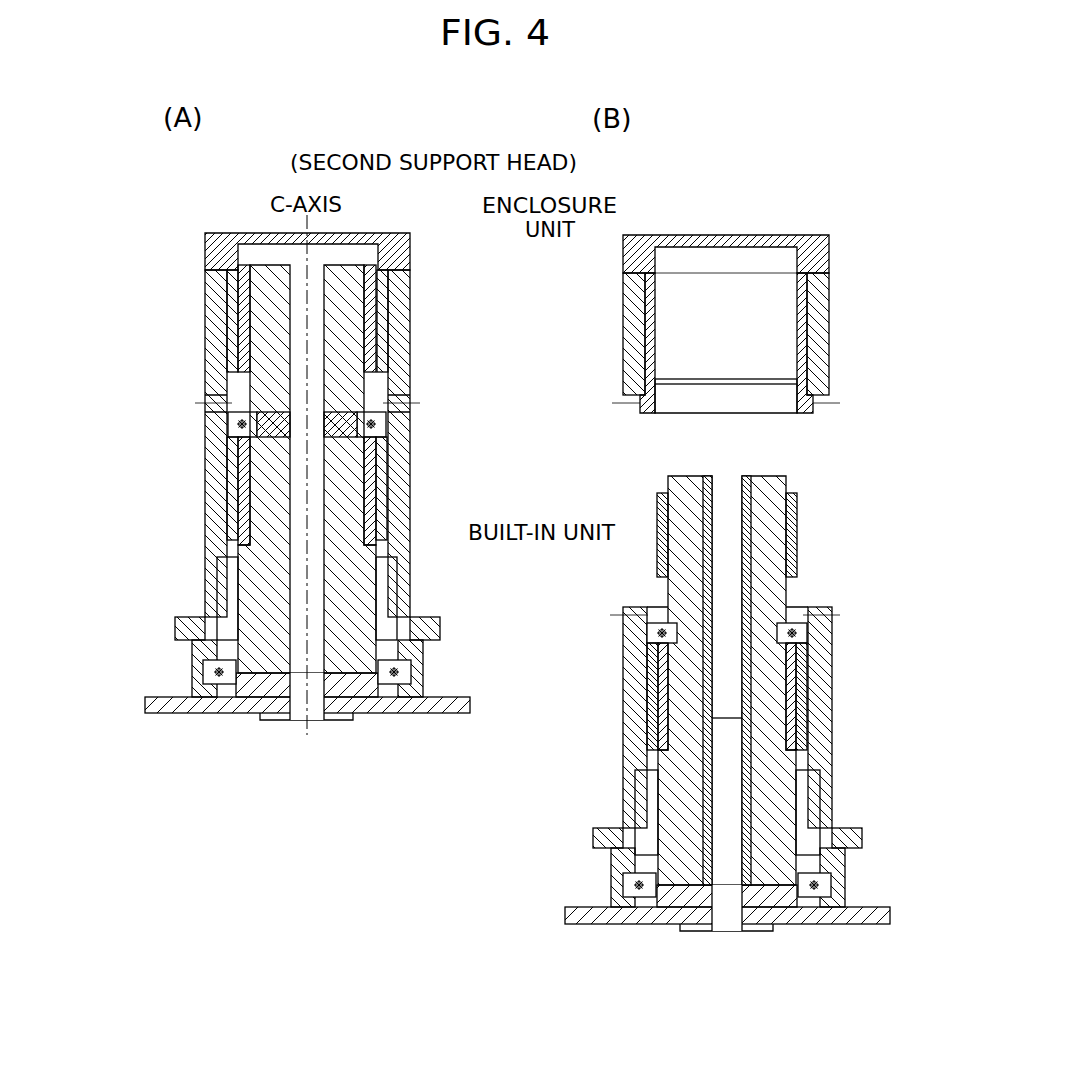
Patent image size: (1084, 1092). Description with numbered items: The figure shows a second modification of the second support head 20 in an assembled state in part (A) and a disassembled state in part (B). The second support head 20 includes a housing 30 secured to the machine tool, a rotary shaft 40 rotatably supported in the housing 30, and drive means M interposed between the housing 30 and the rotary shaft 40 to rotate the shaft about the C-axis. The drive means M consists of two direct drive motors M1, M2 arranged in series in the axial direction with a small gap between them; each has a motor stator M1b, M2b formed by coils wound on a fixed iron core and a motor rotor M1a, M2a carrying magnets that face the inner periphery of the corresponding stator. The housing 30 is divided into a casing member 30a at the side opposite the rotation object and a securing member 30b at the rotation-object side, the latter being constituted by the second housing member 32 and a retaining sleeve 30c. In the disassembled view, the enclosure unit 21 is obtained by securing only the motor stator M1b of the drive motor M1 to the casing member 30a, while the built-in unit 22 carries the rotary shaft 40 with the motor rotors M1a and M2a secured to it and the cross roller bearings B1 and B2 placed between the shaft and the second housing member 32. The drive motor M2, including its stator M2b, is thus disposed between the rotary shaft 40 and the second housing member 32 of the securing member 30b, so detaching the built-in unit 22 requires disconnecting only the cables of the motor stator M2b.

The second support head 20 is at (365, 228).
The housing 30 is at (214, 300).
The drive motor M1 is at (388, 317).
The drive means M is at (215, 437).
The drive motor M2 is at (388, 487).
The rotary shaft 40 is at (240, 597).
The enclosure unit 21 is at (617, 292).
The casing member 30a is at (623, 385).
The motor stator M1b is at (802, 297).
The built-in unit 22 is at (615, 583).
The motor rotor M1a is at (660, 505).
The securing member 30b is at (628, 762).
The bearing B1 is at (652, 633).
The motor rotor M2a is at (652, 680).
The motor stator M2b is at (640, 700).
The second housing member 32 is at (613, 840).
The bearing B2 is at (630, 885).
The retaining sleeve 30c is at (617, 905).